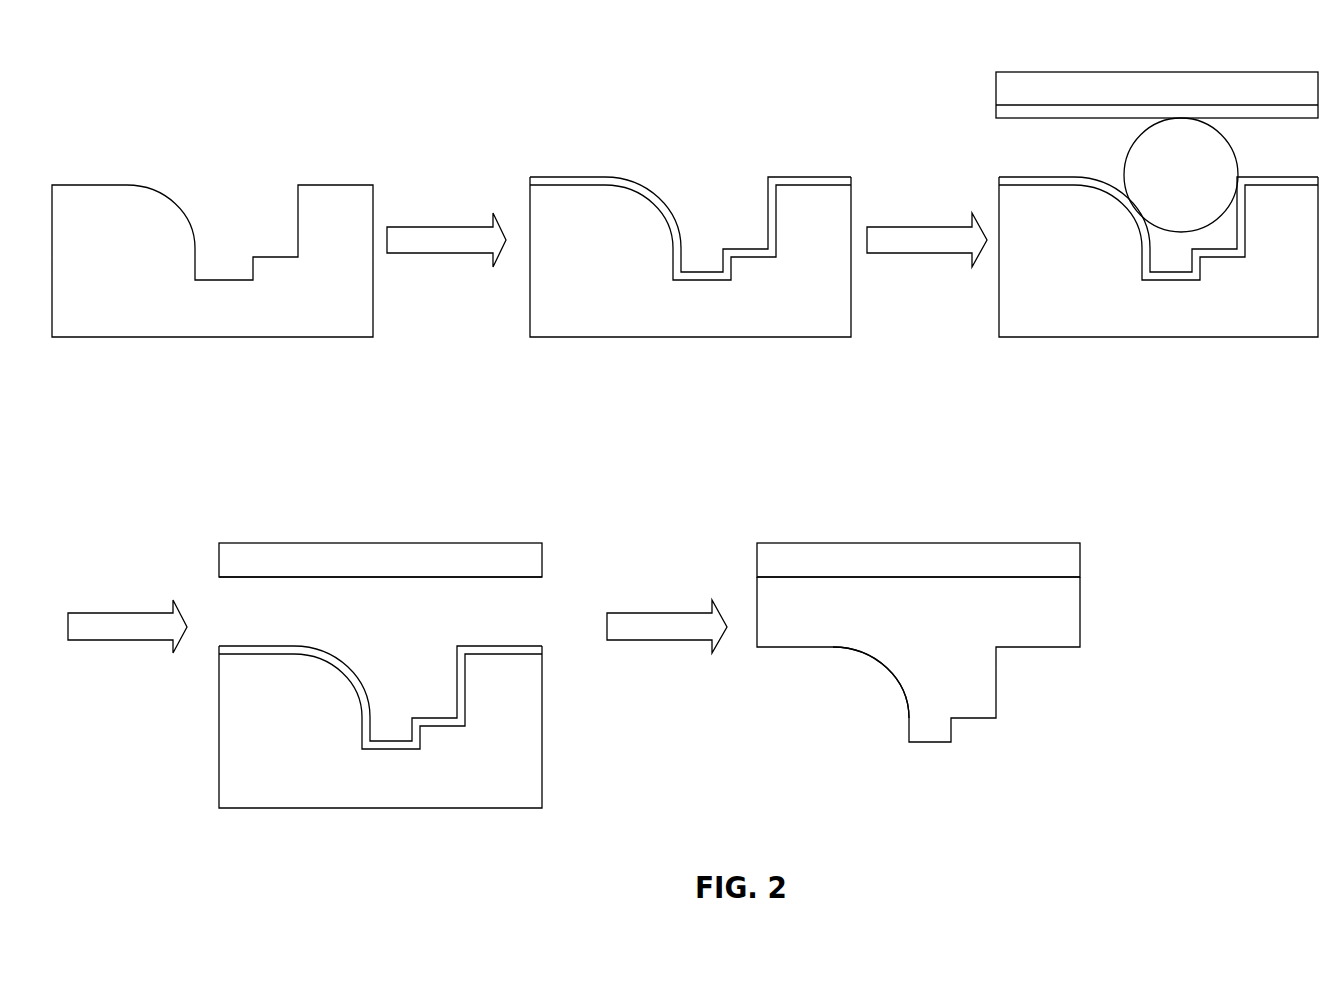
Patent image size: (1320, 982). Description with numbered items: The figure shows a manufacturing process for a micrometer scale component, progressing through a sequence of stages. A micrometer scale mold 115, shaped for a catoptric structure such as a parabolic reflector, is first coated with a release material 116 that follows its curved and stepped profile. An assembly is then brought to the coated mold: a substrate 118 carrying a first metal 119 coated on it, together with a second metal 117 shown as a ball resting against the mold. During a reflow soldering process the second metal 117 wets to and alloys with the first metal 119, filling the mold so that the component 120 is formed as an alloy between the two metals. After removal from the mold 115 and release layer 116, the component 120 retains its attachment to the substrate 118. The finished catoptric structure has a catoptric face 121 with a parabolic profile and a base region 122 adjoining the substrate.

The micrometer scale mold 115 is at (133, 299).
The release material 116 is at (603, 185).
The second metal 117 is at (1208, 167).
The substrate 118 is at (996, 72).
The first metal 119 is at (996, 117).
The component 120 is at (424, 654).
The catoptric face 121 is at (884, 665).
The base region 122 is at (877, 577).